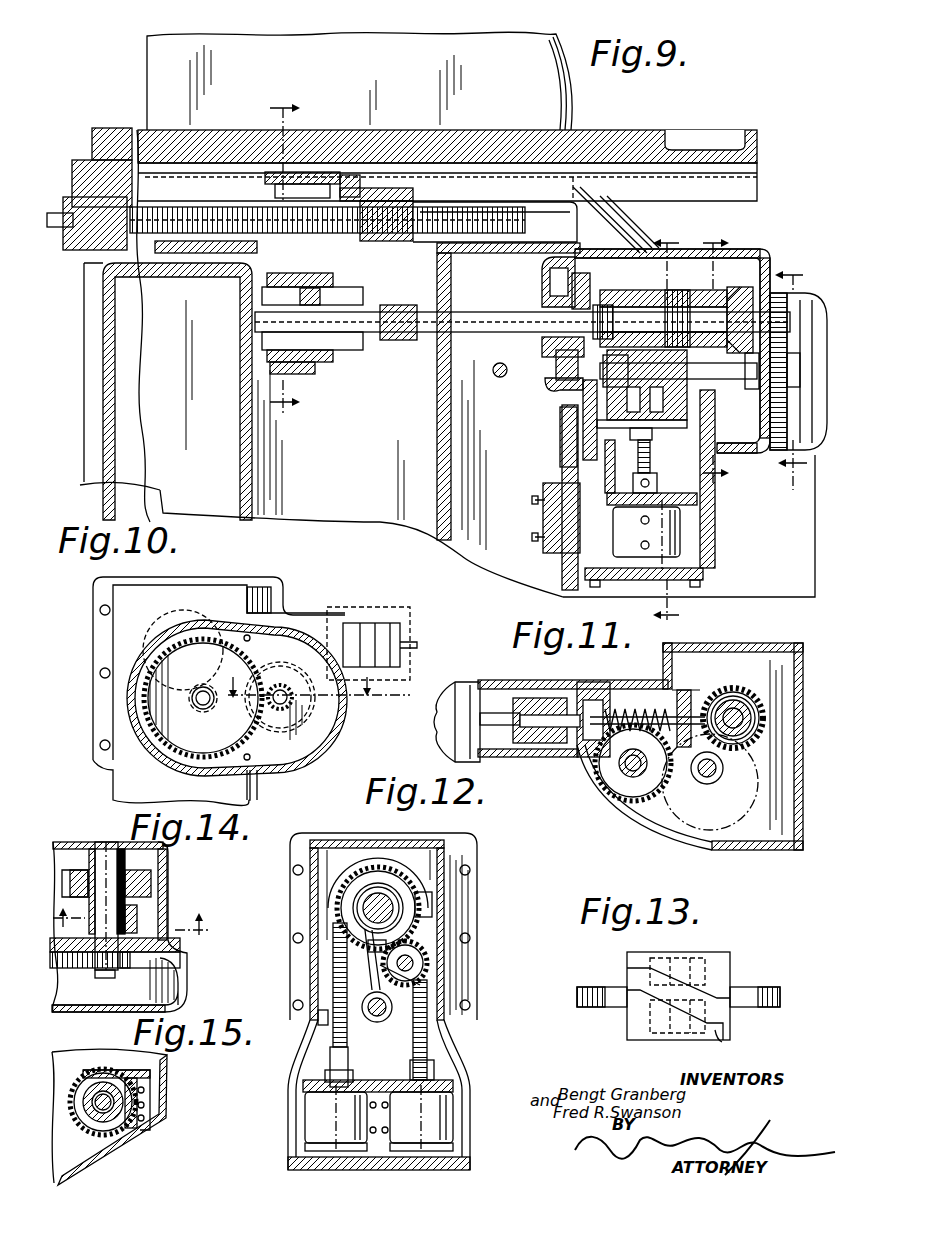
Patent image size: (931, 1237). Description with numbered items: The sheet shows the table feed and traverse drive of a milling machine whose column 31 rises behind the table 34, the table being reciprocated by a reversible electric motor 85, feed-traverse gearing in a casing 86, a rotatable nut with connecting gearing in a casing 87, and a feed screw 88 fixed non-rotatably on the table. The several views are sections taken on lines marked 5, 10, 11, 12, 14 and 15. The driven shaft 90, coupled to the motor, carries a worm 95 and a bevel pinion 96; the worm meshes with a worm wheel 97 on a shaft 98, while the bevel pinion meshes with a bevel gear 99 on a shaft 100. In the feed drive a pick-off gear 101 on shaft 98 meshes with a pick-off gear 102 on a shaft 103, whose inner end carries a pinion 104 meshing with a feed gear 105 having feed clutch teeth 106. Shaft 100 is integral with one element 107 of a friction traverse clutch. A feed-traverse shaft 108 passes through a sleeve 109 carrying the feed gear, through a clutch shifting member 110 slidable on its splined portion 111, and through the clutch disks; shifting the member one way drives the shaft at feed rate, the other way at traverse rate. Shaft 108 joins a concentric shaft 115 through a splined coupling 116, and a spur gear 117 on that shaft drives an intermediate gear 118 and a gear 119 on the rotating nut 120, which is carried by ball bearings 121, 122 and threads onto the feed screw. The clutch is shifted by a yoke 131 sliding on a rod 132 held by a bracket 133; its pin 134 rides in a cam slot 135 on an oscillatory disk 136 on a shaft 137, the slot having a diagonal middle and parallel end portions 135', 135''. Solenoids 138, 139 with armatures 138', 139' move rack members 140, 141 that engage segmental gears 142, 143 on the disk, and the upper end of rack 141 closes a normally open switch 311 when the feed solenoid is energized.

In FIG. 9, the section line 5- 5 is at (285, 259).
In FIG. 9, the section line 10- 10 is at (791, 380).
In FIG. 9, the section line 11- 11 is at (716, 362).
In FIG. 9, the section line 12- 12 is at (666, 429).
In FIG. 10, the section line 14- 14 is at (316, 683).
In FIG. 14, the section line 15- 15 is at (141, 918).
In FIG. 9, the column 31 is at (156, 83).
In FIG. 9, the table 34 is at (615, 140).
In FIG. 11, the reversible electric motor 85 is at (447, 727).
In FIG. 9, the casing 86 is at (712, 540).
In FIG. 11, the casing 86 is at (545, 700).
In FIG. 12, the casing 86 is at (475, 1102).
In FIG. 14, the casing 86 is at (168, 898).
In FIG. 15, the casing 86 is at (165, 1087).
In FIG. 9, the casing 87 is at (340, 283).
In FIG. 9, the feed screw 88 is at (508, 221).
In FIG. 11, the driven shaft 90 is at (567, 745).
In FIG. 11, the worm 95 is at (628, 706).
In FIG. 10, the bevel pinion 96 is at (268, 588).
In FIG. 11, the bevel pinion 96 is at (712, 697).
In FIG. 11, the worm wheel 97 is at (603, 777).
In FIG. 14, the worm wheel 97 is at (150, 882).
In FIG. 15, the worm wheel 97 is at (112, 1133).
In FIG. 11, the worm shaft 98 is at (653, 771).
In FIG. 14, the worm shaft 98 is at (105, 843).
In FIG. 9, the bevel gear 99 is at (767, 272).
In FIG. 11, the bevel gear 99 is at (743, 693).
In FIG. 10, the shaft 100 is at (185, 658).
In FIG. 11, the shaft 100 is at (745, 720).
In FIG. 10, the pick-off gear 101 is at (297, 630).
In FIG. 14, the pick-off gear 101 is at (130, 960).
In FIG. 10, the pick-off gear 102 is at (265, 703).
In FIG. 14, the pick-off gear 102 is at (72, 967).
In FIG. 9, the shaft 103 is at (740, 392).
In FIG. 10, the shaft 103 is at (200, 705).
In FIG. 11, the shaft 103 is at (709, 784).
In FIG. 9, the pinion 104 is at (557, 382).
In FIG. 9, the feed gear 105 is at (560, 283).
In FIG. 9, the feed clutch teeth 106 is at (588, 296).
In FIG. 9, the traverse clutch element 107 is at (738, 296).
In FIG. 9, the feed-traverse shaft 108 is at (466, 318).
In FIG. 9, the sleeve 109 is at (542, 343).
In FIG. 9, the clutch shifting member 110 is at (625, 300).
In FIG. 9, the splined portion 111 is at (593, 320).
In FIG. 9, the concentric shaft 115 is at (335, 340).
In FIG. 9, the splined coupling 116 is at (398, 303).
In FIG. 9, the spur gear 117 is at (300, 372).
In FIG. 9, the intermediate gear 118 is at (322, 294).
In FIG. 9, the gear 119 is at (294, 185).
In FIG. 9, the rotating nut 120 is at (345, 170).
In FIG. 9, the ball bearing 121 is at (236, 282).
In FIG. 9, the ball bearing 122 is at (370, 240).
In FIG. 12, the yoke 131 is at (410, 900).
In FIG. 12, the normally open switch 311 is at (430, 904).
In FIG. 9, the rod 132 is at (556, 355).
In FIG. 12, the rod 132 is at (370, 947).
In FIG. 9, the bracket 133 is at (580, 398).
In FIG. 12, the bracket 133 is at (318, 1016).
In FIG. 9, the pin 134 is at (650, 450).
In FIG. 12, the pin 134 is at (405, 945).
In FIG. 13, the cam slot 135 is at (678, 961).
In FIG. 13, the end portion 135' is at (701, 986).
In FIG. 13, the end portion 135'' is at (745, 1044).
In FIG. 9, the oscillatory disk 136 is at (640, 440).
In FIG. 12, the oscillatory disk 136 is at (396, 1020).
In FIG. 13, the oscillatory disk 136 is at (620, 1000).
In FIG. 9, the shaft 137 is at (613, 423).
In FIG. 12, the shaft 137 is at (373, 1014).
In FIG. 12, the traverse solenoid 138 is at (307, 1118).
In FIG. 12, the armature 138' is at (302, 1074).
In FIG. 9, the feed solenoid 139 is at (678, 535).
In FIG. 12, the feed solenoid 139 is at (455, 1118).
In FIG. 9, the armature 139' is at (684, 497).
In FIG. 12, the armature 139' is at (462, 1067).
In FIG. 12, the rack member 140 is at (333, 1023).
In FIG. 9, the rack member 141 is at (615, 490).
In FIG. 12, the rack member 141 is at (427, 1043).
In FIG. 12, the segmental gear 142 is at (337, 987).
In FIG. 13, the segmental gear 142 is at (588, 987).
In FIG. 12, the segmental gear 143 is at (420, 1000).
In FIG. 13, the segmental gear 143 is at (747, 997).